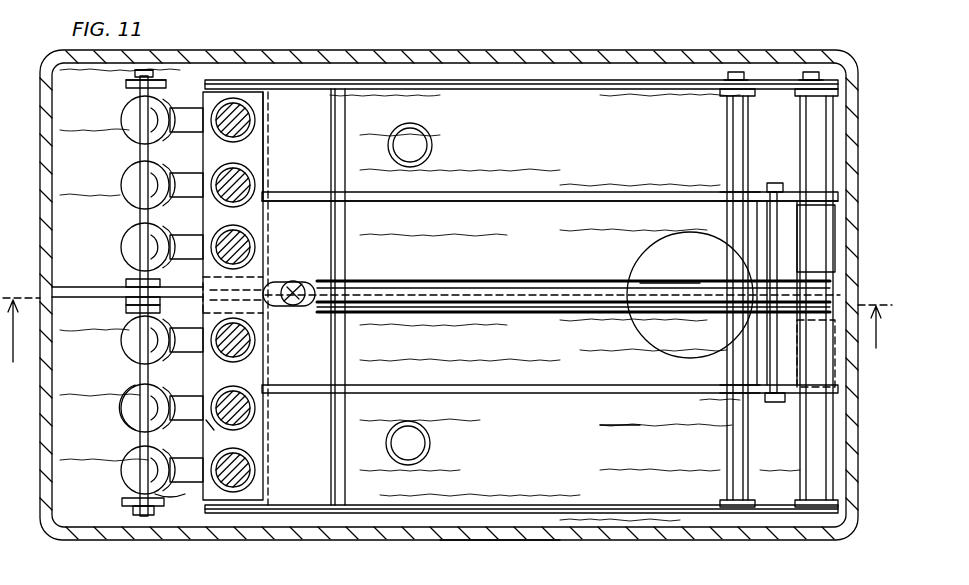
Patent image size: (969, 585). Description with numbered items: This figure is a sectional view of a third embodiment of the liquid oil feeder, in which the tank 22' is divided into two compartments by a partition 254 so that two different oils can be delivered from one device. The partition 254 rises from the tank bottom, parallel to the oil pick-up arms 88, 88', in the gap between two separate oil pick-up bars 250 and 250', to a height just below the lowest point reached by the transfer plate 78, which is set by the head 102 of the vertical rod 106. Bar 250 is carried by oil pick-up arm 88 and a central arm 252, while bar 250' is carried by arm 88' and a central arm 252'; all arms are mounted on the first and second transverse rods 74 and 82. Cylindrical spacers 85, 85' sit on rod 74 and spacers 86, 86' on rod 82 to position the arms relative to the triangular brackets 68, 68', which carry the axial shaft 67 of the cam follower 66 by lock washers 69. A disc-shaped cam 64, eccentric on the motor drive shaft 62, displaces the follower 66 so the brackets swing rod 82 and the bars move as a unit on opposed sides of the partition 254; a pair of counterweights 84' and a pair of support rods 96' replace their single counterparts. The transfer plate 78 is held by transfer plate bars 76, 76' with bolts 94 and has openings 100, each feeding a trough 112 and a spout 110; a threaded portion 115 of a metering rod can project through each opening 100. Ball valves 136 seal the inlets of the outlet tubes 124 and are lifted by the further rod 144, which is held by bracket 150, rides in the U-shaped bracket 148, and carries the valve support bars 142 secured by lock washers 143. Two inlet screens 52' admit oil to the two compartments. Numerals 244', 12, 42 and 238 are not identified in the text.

The threaded lower portion 115 is at (238, 100).
The oil pick-up bar 250' is at (521, 61).
The oil-pick-up arm 88' is at (521, 57).
The first transverse rod 74 is at (735, 72).
The second transverse rod 82 is at (810, 72).
The valve support bar 142 is at (128, 82).
The lock washer 143 is at (152, 79).
The U-shaped bracket 148 is at (122, 112).
The opening 100 is at (268, 118).
The support rod 96' is at (361, 297).
The screen 52' is at (432, 294).
The cylindrical spacer 86' is at (799, 294).
The cylindrical spacer 85' is at (718, 294).
The transfer plate bar 76' is at (550, 184).
The triangular bracket 68' is at (724, 182).
The axial shaft 67 is at (779, 178).
The transfer plate 78 is at (265, 149).
The bolt 94 is at (268, 197).
The tank 22' is at (449, 295).
The plate 244' is at (550, 216).
The rod 106 is at (316, 284).
The disc-shaped cam 64 is at (665, 236).
The central oil pick-up arm 252' is at (552, 270).
The drive shaft 62 is at (654, 282).
The cam follower 66 is at (776, 292).
The counterweight 84' is at (844, 296).
The partition 254 is at (97, 292).
The bracket 150 is at (126, 310).
The further rod 144 is at (138, 346).
The ball valve 136 is at (134, 396).
The spout 110 is at (205, 395).
The head 102 is at (305, 300).
The central arm 252 is at (573, 328).
The section line 12 is at (447, 343).
The trough 112 is at (226, 436).
The transfer plate bar 76 is at (550, 416).
The triangular bracket 68 is at (709, 402).
The lock washer 69 is at (762, 403).
The oil pick-up bar 250 is at (521, 495).
The oil-pick-up arm 88 is at (521, 490).
The tank 42 is at (635, 482).
The cylindrical spacer 85 is at (718, 488).
The cylindrical spacer 86 is at (799, 488).
The outlet tube 124 is at (175, 500).
The bottom wall 238 is at (500, 540).